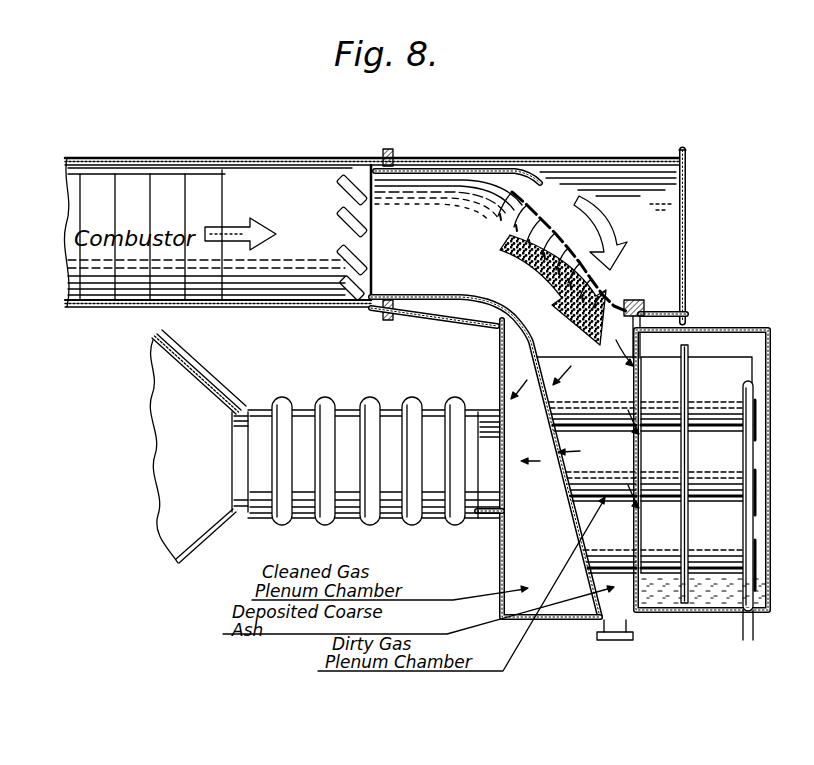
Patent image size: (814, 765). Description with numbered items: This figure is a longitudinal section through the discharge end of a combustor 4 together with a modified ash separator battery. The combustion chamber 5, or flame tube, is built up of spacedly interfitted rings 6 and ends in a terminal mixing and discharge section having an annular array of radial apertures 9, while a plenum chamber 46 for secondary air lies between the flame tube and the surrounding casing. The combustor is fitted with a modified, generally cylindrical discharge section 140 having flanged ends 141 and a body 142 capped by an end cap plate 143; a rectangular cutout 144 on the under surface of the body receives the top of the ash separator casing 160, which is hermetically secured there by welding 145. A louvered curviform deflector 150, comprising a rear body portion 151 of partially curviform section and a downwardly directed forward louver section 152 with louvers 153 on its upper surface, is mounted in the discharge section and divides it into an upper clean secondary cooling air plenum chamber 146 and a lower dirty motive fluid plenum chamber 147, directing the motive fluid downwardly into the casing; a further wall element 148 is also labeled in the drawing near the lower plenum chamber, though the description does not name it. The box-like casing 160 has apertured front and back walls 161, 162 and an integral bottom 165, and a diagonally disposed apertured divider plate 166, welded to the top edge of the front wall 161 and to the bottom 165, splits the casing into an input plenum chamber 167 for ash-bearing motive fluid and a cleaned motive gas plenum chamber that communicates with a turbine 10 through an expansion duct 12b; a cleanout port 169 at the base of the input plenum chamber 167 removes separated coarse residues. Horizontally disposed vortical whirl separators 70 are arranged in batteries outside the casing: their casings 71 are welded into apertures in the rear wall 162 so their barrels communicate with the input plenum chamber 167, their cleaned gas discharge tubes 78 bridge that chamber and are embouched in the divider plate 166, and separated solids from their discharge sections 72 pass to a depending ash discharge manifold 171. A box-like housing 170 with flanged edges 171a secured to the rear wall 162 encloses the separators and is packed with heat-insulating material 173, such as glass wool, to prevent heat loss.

The combustor 4 is at (247, 165).
The combustion chamber 5 is at (104, 170).
The spacedly interfitted rings 6 is at (206, 235).
The radial apertures 9 is at (352, 174).
The turbine 10 is at (207, 382).
The expansion duct 12b is at (330, 400).
The plenum chamber for secondary air 46 is at (148, 172).
The vortical whirl separators 70 is at (666, 385).
The casings of separators 71 is at (646, 362).
The discharge sections 72 is at (732, 486).
The cleaned gas discharge tubes 78 is at (586, 465).
The combustor discharge section 140 is at (555, 167).
The flanged ends 141 is at (393, 156).
The body 142 is at (522, 171).
The end cap plate 143 is at (688, 223).
The rectangular cutout 144 is at (665, 309).
The welding 145 is at (494, 327).
The clean secondary cooling air plenum chamber 146 is at (660, 268).
The dirty motive fluid plenum chamber 147 is at (455, 318).
The outer wall 148 is at (460, 296).
The louvered curviform deflector 150 is at (466, 170).
The rear body portion 151 is at (433, 172).
The forward louver section 152 is at (583, 172).
The louvers 153 is at (588, 244).
The ash separator casing 160 is at (499, 376).
The front wall 161 is at (497, 544).
The back wall 162 is at (633, 331).
The bottom 165 is at (568, 618).
The divider plate 166 is at (545, 427).
The input plenum chamber 167 is at (586, 426).
The cleanout port 169 is at (633, 633).
The box-like housing 170 is at (769, 488).
The ash discharge manifold 171 is at (733, 624).
The flanged edges 171a is at (672, 327).
The heat-insulating material 173 is at (756, 591).